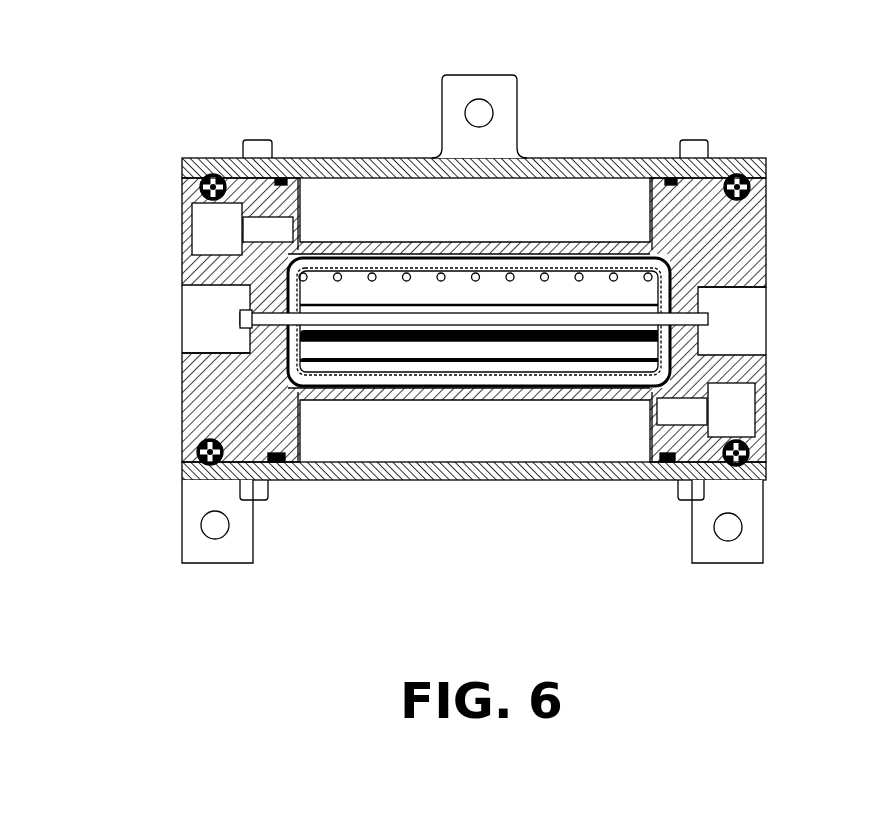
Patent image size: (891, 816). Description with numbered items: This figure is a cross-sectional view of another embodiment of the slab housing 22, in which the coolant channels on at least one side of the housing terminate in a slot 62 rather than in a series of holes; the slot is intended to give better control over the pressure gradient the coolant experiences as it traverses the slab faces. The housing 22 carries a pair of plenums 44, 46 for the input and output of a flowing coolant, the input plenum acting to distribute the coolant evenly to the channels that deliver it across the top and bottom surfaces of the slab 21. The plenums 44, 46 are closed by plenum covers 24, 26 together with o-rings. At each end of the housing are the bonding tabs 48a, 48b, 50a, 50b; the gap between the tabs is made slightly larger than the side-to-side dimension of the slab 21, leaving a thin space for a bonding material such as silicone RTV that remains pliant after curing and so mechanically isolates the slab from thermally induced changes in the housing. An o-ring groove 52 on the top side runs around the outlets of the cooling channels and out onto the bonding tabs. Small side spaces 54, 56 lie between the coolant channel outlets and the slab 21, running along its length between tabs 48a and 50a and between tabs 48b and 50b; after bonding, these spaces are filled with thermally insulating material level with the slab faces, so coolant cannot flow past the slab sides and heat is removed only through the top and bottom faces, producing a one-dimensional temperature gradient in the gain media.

The slab 21 is at (716, 317).
The slab housing 22 is at (766, 200).
The plenum cover 24 is at (603, 482).
The plenum cover 26 is at (340, 158).
The plenum 44 is at (537, 200).
The plenum 46 is at (453, 437).
The bonding tab 48a is at (760, 256).
The bonding tab 48b is at (745, 370).
The bonding tab 50a is at (252, 292).
The bonding tab 50b is at (213, 368).
The o-ring groove 52 is at (641, 262).
The side space 54 is at (365, 333).
The side space 56 is at (378, 304).
The slot 62 is at (338, 363).